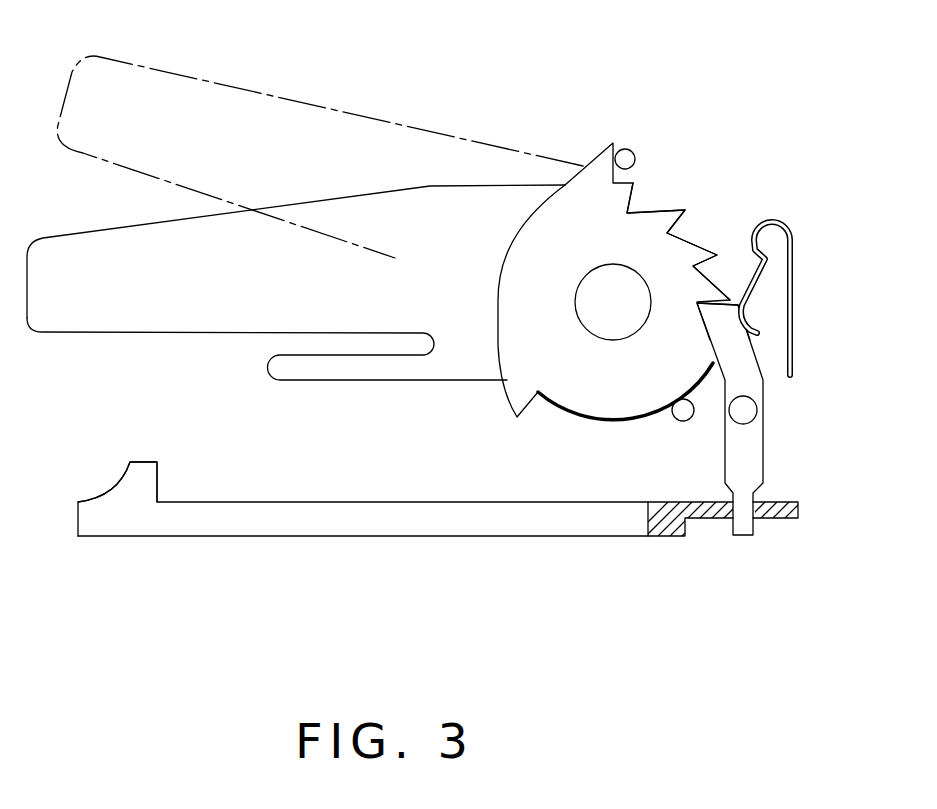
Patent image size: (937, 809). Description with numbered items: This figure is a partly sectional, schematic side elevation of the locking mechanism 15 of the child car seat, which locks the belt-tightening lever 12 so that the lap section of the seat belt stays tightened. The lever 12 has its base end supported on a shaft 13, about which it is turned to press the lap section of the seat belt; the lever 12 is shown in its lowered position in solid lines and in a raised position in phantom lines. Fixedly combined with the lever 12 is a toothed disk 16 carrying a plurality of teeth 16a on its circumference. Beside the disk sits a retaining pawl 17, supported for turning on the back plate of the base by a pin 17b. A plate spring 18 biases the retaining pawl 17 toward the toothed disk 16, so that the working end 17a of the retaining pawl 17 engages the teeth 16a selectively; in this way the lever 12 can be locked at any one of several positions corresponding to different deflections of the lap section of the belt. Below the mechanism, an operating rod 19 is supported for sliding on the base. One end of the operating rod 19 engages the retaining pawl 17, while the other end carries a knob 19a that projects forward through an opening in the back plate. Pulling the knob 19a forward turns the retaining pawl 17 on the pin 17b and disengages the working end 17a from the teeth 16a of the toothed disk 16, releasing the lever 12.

The lever 12 is at (127, 303).
The shaft 13 is at (600, 300).
The locking mechanism 15 is at (695, 98).
The toothed disk 16 is at (575, 388).
The teeth 16a is at (697, 237).
The retaining pawl 17 is at (752, 458).
The working end 17a is at (716, 322).
The pin 17b is at (748, 410).
The plate spring 18 is at (793, 263).
The operating rod 19 is at (373, 523).
The knob 19a is at (118, 487).